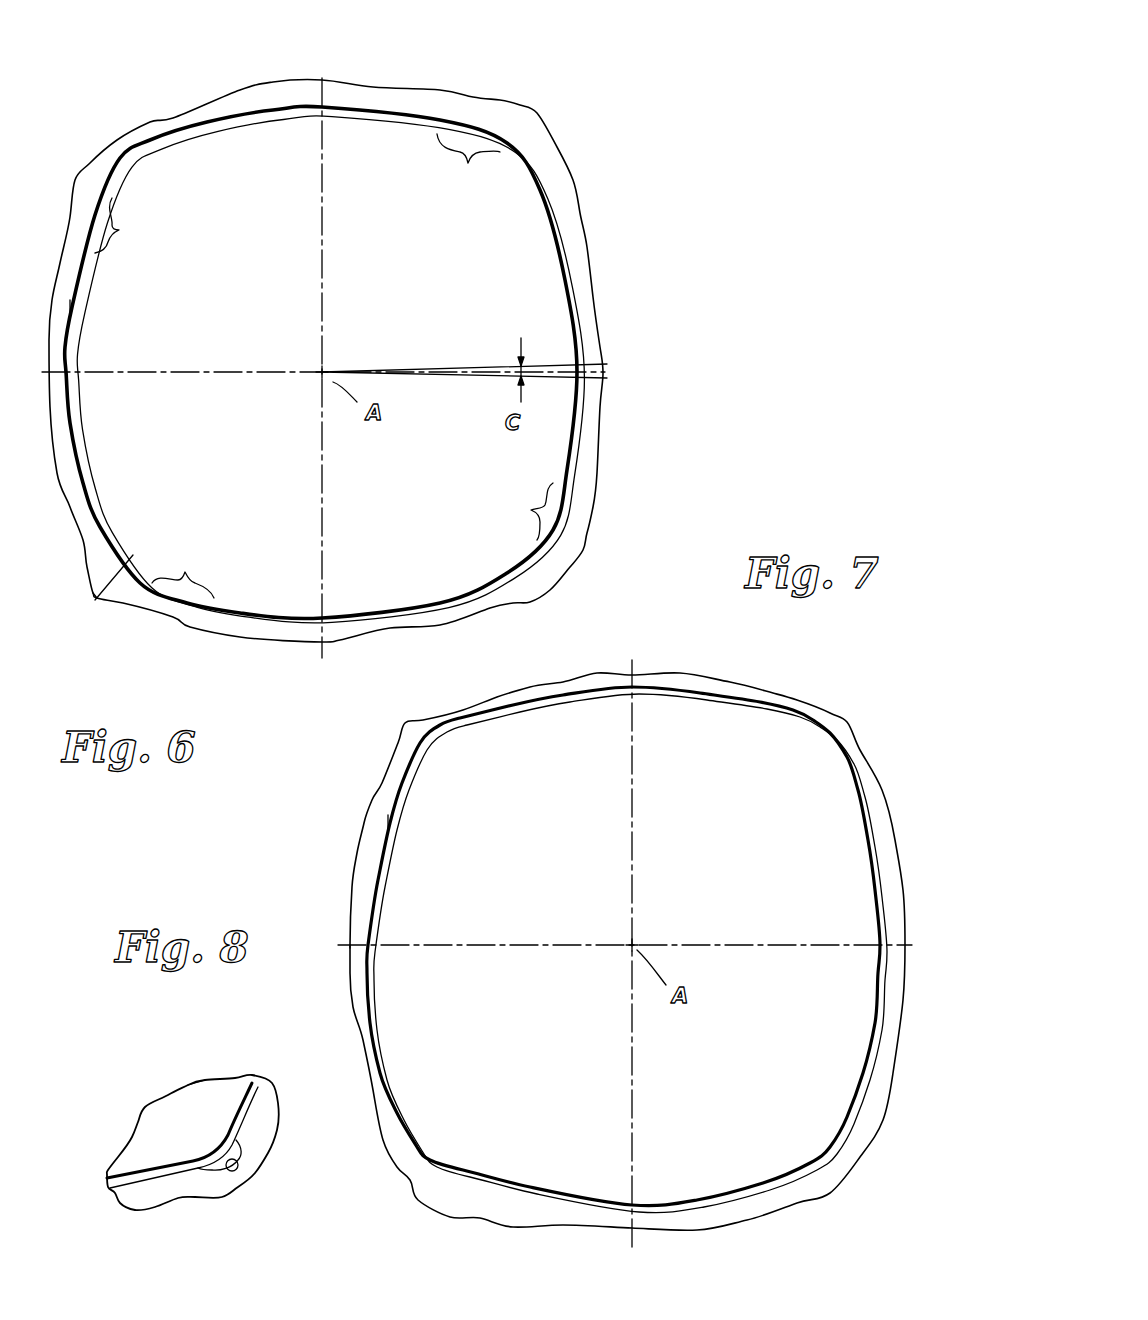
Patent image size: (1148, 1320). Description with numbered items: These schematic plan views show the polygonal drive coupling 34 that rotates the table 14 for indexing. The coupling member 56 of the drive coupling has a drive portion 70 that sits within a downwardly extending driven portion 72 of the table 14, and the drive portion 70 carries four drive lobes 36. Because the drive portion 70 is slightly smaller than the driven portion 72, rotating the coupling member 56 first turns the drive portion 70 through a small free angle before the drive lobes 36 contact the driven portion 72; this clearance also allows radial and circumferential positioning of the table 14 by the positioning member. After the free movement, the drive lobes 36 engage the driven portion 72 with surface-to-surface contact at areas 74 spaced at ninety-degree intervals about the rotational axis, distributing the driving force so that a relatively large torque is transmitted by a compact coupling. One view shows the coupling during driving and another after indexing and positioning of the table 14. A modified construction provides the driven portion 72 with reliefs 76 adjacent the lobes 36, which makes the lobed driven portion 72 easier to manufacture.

In FIG. 6, the table 14 is at (378, 86).
In FIG. 7, the table 14 is at (598, 673).
In FIG. 8, the table 14 is at (265, 1128).
In FIG. 6, the polygonal drive coupling 34 is at (540, 192).
In FIG. 7, the polygonal drive coupling 34 is at (773, 713).
In FIG. 8, the polygonal drive coupling 34 is at (262, 1091).
In FIG. 6, the drive lobes 36 is at (97, 220).
In FIG. 7, the drive lobes 36 is at (452, 752).
In FIG. 8, the drive lobes 36 is at (188, 1150).
In FIG. 6, the coupling member 56 is at (545, 302).
In FIG. 7, the coupling member 56 is at (847, 813).
In FIG. 8, the coupling member 56 is at (212, 1083).
In FIG. 6, the drive portion 70 is at (95, 600).
In FIG. 7, the drive portion 70 is at (398, 852).
In FIG. 6, the driven portion 72 is at (72, 308).
In FIG. 7, the driven portion 72 is at (388, 823).
In FIG. 6, the areas of surface-to-surface contact 74 is at (324, 366).
In FIG. 8, the reliefs 76 is at (240, 1164).